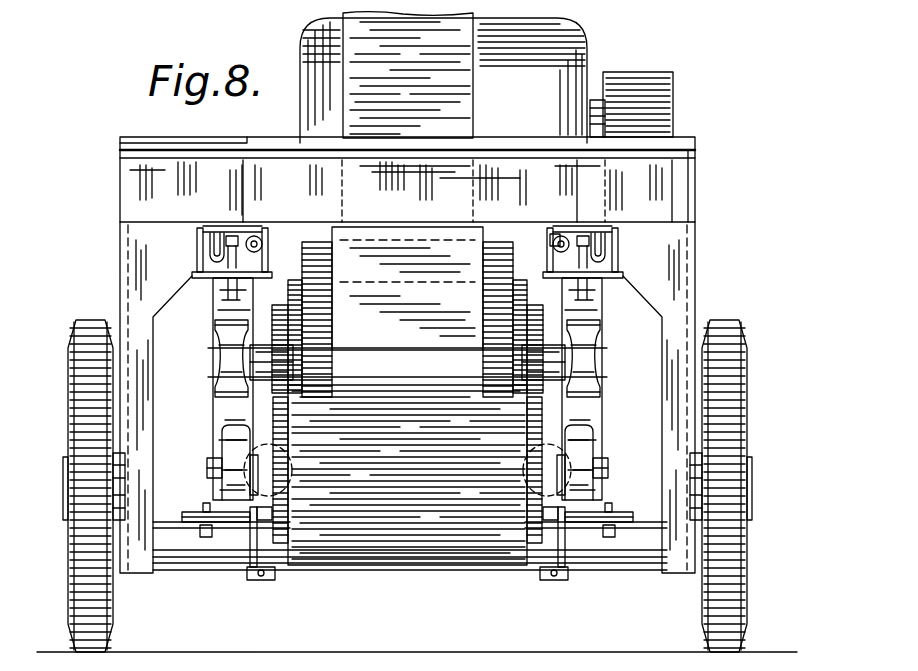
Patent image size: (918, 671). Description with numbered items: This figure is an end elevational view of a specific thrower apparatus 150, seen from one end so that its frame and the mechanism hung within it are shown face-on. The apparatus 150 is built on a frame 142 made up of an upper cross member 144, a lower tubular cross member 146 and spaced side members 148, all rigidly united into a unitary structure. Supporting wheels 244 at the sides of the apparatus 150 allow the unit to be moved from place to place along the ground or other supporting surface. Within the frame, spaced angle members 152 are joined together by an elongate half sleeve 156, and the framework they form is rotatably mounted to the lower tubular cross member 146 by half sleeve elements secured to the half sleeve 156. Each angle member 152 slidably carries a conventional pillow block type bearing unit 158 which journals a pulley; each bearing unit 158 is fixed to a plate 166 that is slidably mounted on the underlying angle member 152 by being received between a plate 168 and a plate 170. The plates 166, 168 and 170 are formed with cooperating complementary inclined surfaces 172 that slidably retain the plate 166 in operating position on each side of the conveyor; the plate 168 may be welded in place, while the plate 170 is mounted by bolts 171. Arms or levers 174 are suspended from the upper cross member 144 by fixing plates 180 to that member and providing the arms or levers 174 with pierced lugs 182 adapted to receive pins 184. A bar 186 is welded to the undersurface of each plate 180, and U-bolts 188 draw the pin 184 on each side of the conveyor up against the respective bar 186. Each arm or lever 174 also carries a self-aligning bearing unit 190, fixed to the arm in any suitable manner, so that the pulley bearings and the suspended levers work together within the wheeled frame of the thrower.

The frame 142 is at (517, 167).
The upper cross member 144 is at (482, 167).
The lower tubular cross member 146 is at (570, 573).
The side members 148 is at (142, 255).
The thrower apparatus 150 is at (119, 134).
The angle members 152 is at (240, 540).
The elongate half sleeve 156 is at (388, 567).
The pillow block type bearing unit 158 is at (598, 437).
The plate 166 is at (234, 540).
The plate 168 is at (283, 523).
The plate 170 is at (192, 525).
The bolts 171 is at (207, 538).
The inclined surfaces 172 is at (448, 571).
The arms or levers 174 is at (222, 307).
The plates 180 is at (558, 228).
The pierced lugs 182 is at (260, 228).
The pins 184 is at (283, 228).
The bar 186 is at (222, 226).
The U-bolts 188 is at (603, 226).
The self-aligning bearing unit 190 is at (228, 352).
The supporting wheels 244 is at (80, 395).